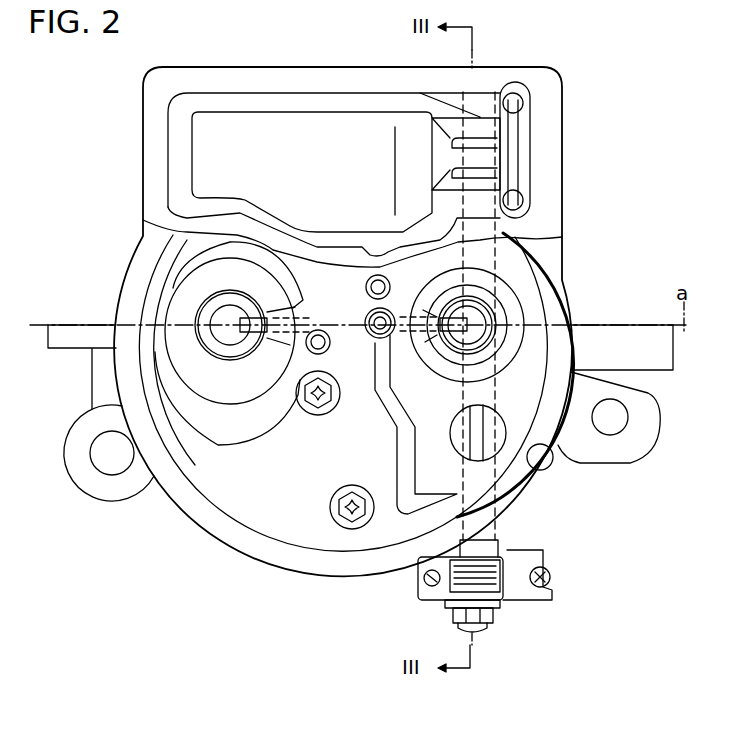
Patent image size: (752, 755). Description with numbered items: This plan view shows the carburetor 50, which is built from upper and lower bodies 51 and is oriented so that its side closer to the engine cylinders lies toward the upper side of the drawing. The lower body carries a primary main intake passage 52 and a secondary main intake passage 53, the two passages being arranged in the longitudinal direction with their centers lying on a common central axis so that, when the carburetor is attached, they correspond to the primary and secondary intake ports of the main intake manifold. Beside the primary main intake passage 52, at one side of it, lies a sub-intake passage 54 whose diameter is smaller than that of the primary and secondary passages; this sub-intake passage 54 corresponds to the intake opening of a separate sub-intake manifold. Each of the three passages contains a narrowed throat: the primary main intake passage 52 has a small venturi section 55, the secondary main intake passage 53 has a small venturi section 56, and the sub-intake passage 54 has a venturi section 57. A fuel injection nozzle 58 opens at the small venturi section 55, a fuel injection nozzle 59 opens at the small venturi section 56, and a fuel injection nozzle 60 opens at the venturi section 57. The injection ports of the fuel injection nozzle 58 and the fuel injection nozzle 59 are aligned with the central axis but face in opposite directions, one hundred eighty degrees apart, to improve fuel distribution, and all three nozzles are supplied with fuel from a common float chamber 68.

The carburetor 50 is at (195, 523).
The upper and lower bodies 51 is at (257, 551).
The primary main intake passage 52 is at (517, 292).
The secondary main intake passage 53 is at (178, 290).
The sub-intake passage 54 is at (500, 480).
The small venturi section 55 is at (488, 338).
The small venturi section 56 is at (212, 337).
The venturi section 57 is at (445, 457).
The fuel injection nozzle 58 is at (465, 318).
The fuel injection nozzle 59 is at (243, 317).
The fuel injection nozzle 60 is at (490, 440).
The float chamber 68 is at (306, 108).